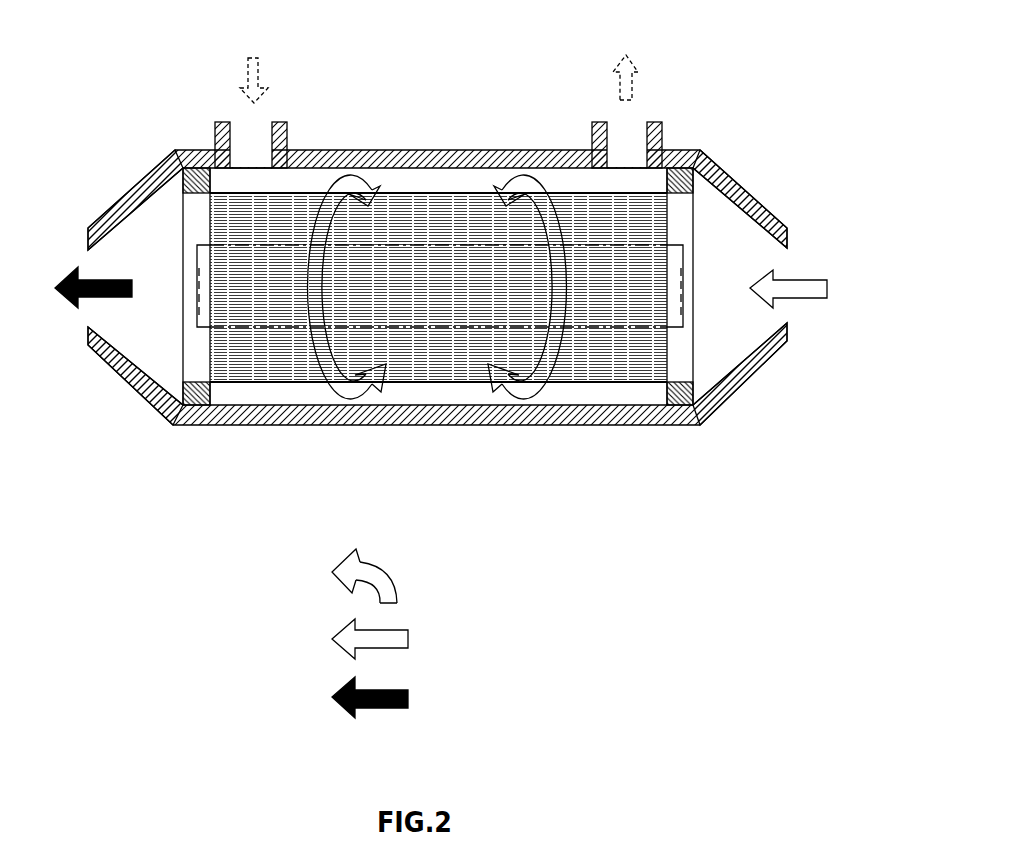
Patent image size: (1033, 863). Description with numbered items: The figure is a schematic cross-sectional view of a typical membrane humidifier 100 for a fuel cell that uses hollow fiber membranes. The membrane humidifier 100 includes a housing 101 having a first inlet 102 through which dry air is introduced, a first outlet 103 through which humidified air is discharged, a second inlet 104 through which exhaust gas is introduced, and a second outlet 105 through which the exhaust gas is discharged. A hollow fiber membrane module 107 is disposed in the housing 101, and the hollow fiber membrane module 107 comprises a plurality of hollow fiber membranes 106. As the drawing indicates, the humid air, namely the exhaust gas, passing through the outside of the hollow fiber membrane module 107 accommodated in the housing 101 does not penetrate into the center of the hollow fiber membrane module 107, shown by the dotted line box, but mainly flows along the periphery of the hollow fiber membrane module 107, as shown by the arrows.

The membrane humidifier 100 is at (522, 53).
The housing 101 is at (348, 425).
The first inlet 102 is at (695, 228).
The first outlet 103 is at (183, 222).
The second inlet 104 is at (253, 131).
The second outlet 105 is at (623, 132).
The hollow fiber membranes 106 is at (296, 352).
The hollow fiber membrane module 107 is at (478, 398).